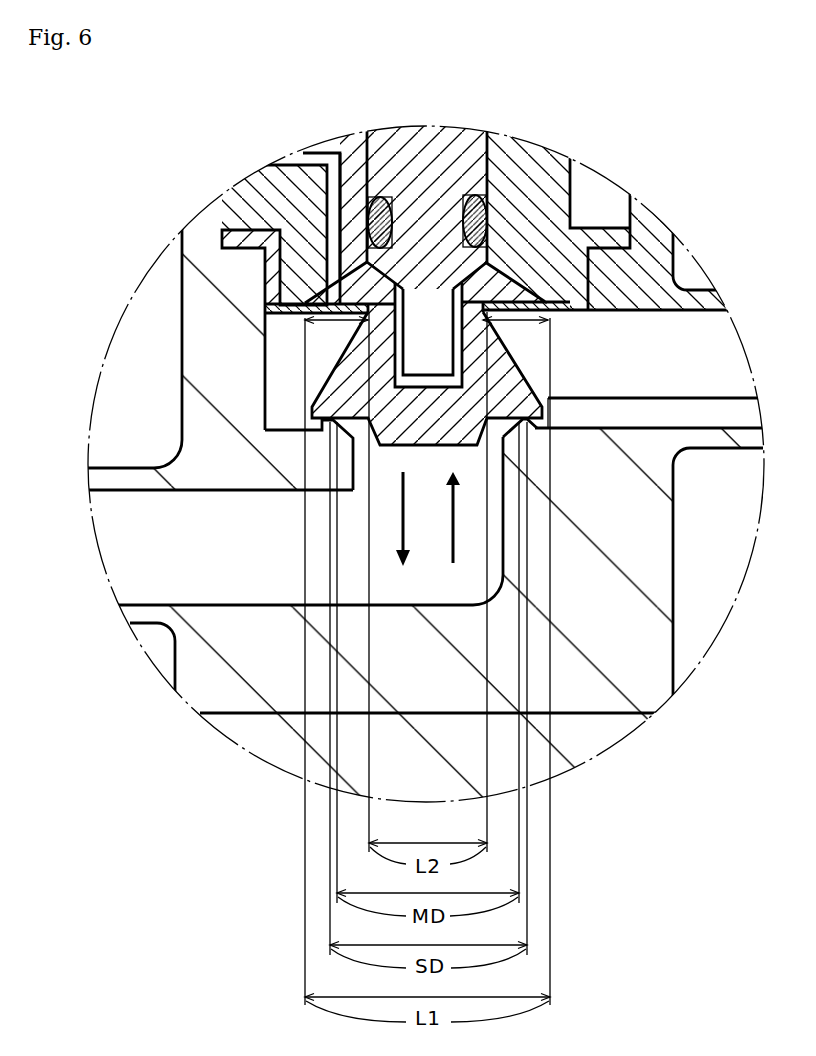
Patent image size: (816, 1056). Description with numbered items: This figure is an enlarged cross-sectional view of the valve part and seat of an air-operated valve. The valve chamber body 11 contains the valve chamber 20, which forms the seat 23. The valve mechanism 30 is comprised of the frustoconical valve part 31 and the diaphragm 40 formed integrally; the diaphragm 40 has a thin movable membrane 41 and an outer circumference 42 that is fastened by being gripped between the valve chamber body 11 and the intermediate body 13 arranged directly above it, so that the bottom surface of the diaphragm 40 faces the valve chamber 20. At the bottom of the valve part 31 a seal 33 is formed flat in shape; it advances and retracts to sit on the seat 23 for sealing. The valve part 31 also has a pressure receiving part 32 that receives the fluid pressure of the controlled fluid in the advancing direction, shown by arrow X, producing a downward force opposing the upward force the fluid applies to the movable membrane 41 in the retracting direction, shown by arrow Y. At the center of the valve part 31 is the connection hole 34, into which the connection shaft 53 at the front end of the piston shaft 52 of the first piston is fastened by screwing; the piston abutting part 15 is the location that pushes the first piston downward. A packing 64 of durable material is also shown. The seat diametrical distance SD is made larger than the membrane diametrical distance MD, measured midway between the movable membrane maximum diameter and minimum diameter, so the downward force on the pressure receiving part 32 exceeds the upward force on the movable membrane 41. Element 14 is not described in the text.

The valve chamber body 11 is at (660, 677).
The intermediate body 13 is at (250, 191).
The sleeve 14 is at (303, 160).
The piston abutting part 15 is at (342, 299).
The valve chamber 20 is at (283, 577).
The seat 23 is at (748, 400).
The valve mechanism 30 is at (400, 448).
The valve part 31 is at (307, 415).
The pressure receiving part 32 is at (525, 385).
The seal 33 is at (490, 405).
The connection hole 34 is at (413, 337).
The diaphragm 40 is at (632, 230).
The movable membrane 41 is at (300, 313).
The outer circumference 42 is at (602, 237).
The piston shaft 52 is at (388, 157).
The connection shaft 53 is at (443, 305).
The packing 64 is at (486, 196).